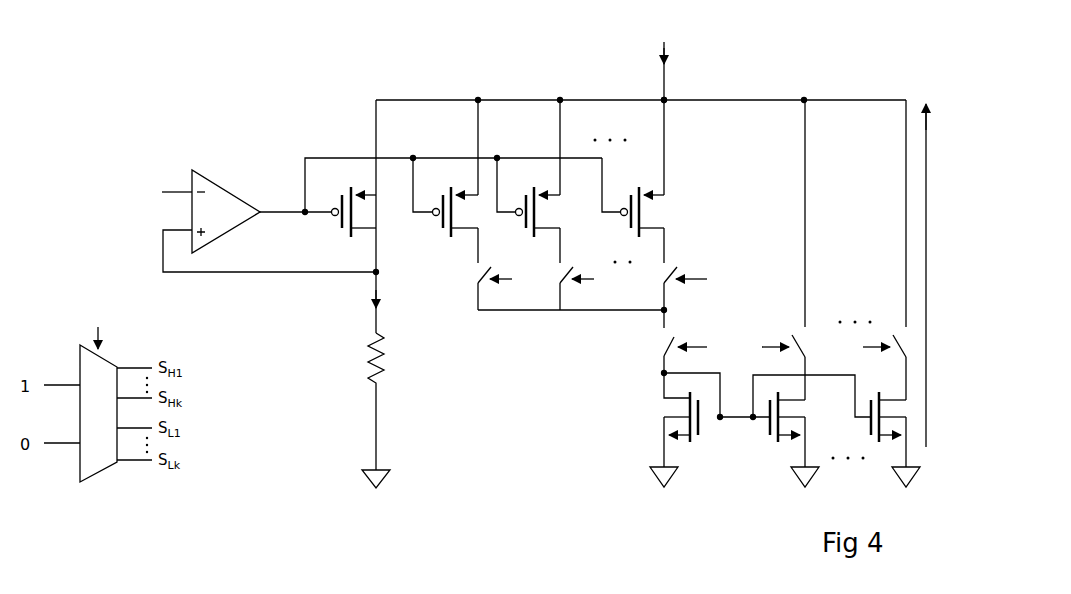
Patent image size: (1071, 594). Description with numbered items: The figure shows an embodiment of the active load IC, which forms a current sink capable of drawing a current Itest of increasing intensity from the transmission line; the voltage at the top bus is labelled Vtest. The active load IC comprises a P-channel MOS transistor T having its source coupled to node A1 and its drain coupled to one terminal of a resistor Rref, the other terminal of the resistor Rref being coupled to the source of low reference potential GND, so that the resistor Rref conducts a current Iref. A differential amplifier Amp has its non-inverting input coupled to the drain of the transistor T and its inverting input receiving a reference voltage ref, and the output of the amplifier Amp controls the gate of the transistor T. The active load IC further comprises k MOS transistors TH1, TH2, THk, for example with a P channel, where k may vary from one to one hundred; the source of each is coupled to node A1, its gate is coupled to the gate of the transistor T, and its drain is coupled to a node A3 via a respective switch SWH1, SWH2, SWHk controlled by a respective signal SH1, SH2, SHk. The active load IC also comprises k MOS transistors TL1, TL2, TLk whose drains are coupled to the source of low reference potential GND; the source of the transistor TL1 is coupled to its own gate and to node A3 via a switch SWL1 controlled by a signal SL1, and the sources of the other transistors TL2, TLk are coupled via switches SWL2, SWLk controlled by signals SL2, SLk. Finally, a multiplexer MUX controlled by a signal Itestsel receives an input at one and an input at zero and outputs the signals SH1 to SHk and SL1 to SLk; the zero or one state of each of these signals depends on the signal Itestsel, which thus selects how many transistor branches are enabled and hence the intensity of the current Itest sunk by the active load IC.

The active load IC is at (314, 62).
The differential amplifier Amp is at (222, 186).
The reference voltage ref is at (157, 192).
The MOS transistor T is at (340, 229).
The MOS transistor TH1 is at (440, 228).
The MOS transistor TH2 is at (523, 228).
The MOS transistor THk is at (628, 228).
The switch SWH1 is at (476, 280).
The switch SWH2 is at (559, 284).
The switch SWHk is at (663, 284).
The signal SH1 is at (493, 278).
The signal SH2 is at (573, 278).
The signal SHk is at (678, 278).
The node A3 is at (660, 313).
The current Itest is at (681, 71).
The node A1 is at (668, 97).
The test voltage Vtest is at (917, 135).
The switch SWL1 is at (664, 346).
The switch SWL2 is at (802, 341).
The switch SWLk is at (902, 341).
The signal SL1 is at (688, 346).
The signal SL2 is at (786, 345).
The signal SLk is at (886, 346).
The MOS transistor TL1 is at (701, 437).
The MOS transistor TL2 is at (769, 437).
The MOS transistor TLk is at (870, 437).
The current Iref is at (391, 309).
The resistor Rref is at (350, 401).
The source of low reference potential GND is at (384, 480).
The multiplexer MUX is at (98, 413).
The signal Itestsel is at (92, 325).